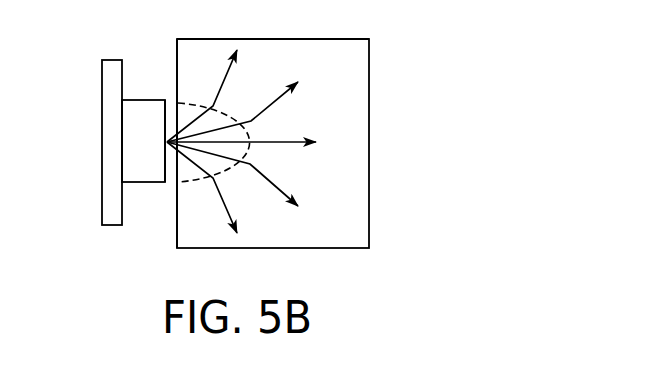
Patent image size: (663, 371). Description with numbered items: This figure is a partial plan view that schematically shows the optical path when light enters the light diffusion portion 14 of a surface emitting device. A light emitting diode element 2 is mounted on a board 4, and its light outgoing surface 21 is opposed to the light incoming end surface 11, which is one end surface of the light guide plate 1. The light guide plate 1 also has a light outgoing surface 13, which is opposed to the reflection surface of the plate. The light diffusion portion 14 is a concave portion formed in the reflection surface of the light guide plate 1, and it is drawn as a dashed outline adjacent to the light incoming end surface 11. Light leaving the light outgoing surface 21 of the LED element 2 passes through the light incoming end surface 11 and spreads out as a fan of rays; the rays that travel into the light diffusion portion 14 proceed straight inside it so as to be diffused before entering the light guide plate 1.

The light guide plate 1 is at (370, 99).
The light emitting diode element 2 is at (138, 100).
The board 4 is at (102, 78).
The light incoming end surface 11 is at (176, 213).
The light outgoing surface 13 is at (355, 62).
The light diffusion portion 14 is at (258, 156).
The light outgoing surface of LED element 21 is at (177, 112).